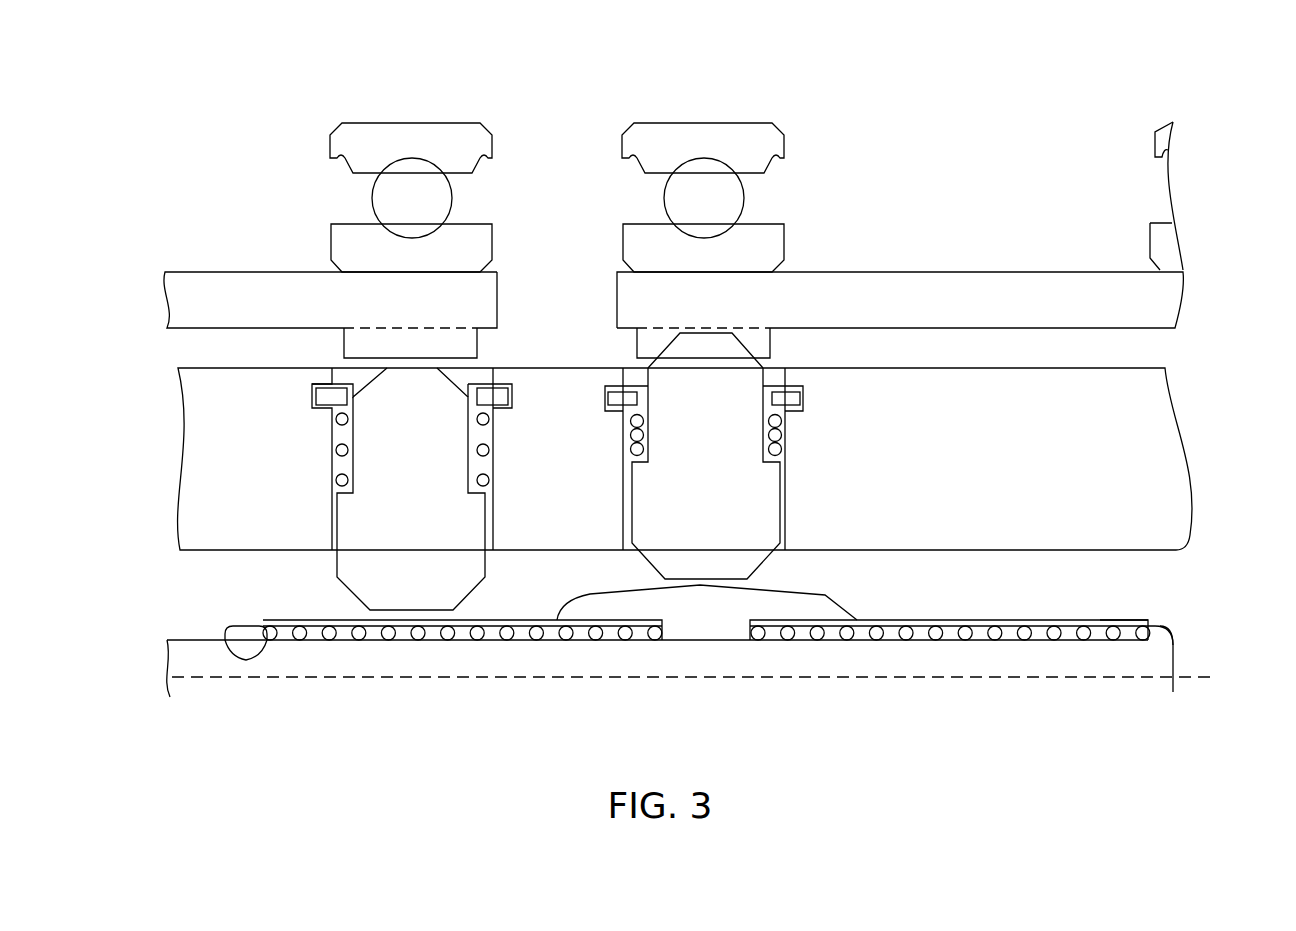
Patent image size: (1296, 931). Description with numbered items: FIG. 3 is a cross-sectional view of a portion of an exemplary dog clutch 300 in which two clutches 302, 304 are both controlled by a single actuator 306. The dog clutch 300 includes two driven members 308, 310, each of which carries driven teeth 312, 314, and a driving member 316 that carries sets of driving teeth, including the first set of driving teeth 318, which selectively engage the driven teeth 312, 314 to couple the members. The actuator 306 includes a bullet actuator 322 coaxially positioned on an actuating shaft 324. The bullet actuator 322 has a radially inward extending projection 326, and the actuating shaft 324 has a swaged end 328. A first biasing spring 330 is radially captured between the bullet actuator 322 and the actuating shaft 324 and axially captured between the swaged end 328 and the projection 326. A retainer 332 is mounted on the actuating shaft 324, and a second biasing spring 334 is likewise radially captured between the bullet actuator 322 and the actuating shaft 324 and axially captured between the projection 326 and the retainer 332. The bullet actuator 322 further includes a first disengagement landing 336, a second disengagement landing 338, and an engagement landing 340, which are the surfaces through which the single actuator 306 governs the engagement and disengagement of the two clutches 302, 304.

The dog clutch 300 is at (1220, 132).
The first clutch 302 is at (318, 128).
The second clutch 304 is at (800, 117).
The actuator 306 is at (1190, 630).
The first driven member 308 is at (218, 298).
The second driven member 310 is at (1152, 310).
The first driven teeth 312 is at (458, 342).
The second driven teeth 314 is at (757, 335).
The driving member 316 is at (1160, 462).
The first set of driving teeth 318 is at (458, 520).
The bullet actuator 322 is at (1170, 583).
The actuating shaft 324 is at (1137, 655).
The radially inward extending projection 326 is at (704, 640).
The swaged end 328 is at (1175, 658).
The first biasing spring 330 is at (758, 490).
The retainer 332 is at (247, 660).
The second biasing spring 334 is at (567, 640).
The first disengagement landing 336 is at (1063, 619).
The second disengagement landing 338 is at (508, 618).
The engagement landing 340 is at (768, 588).